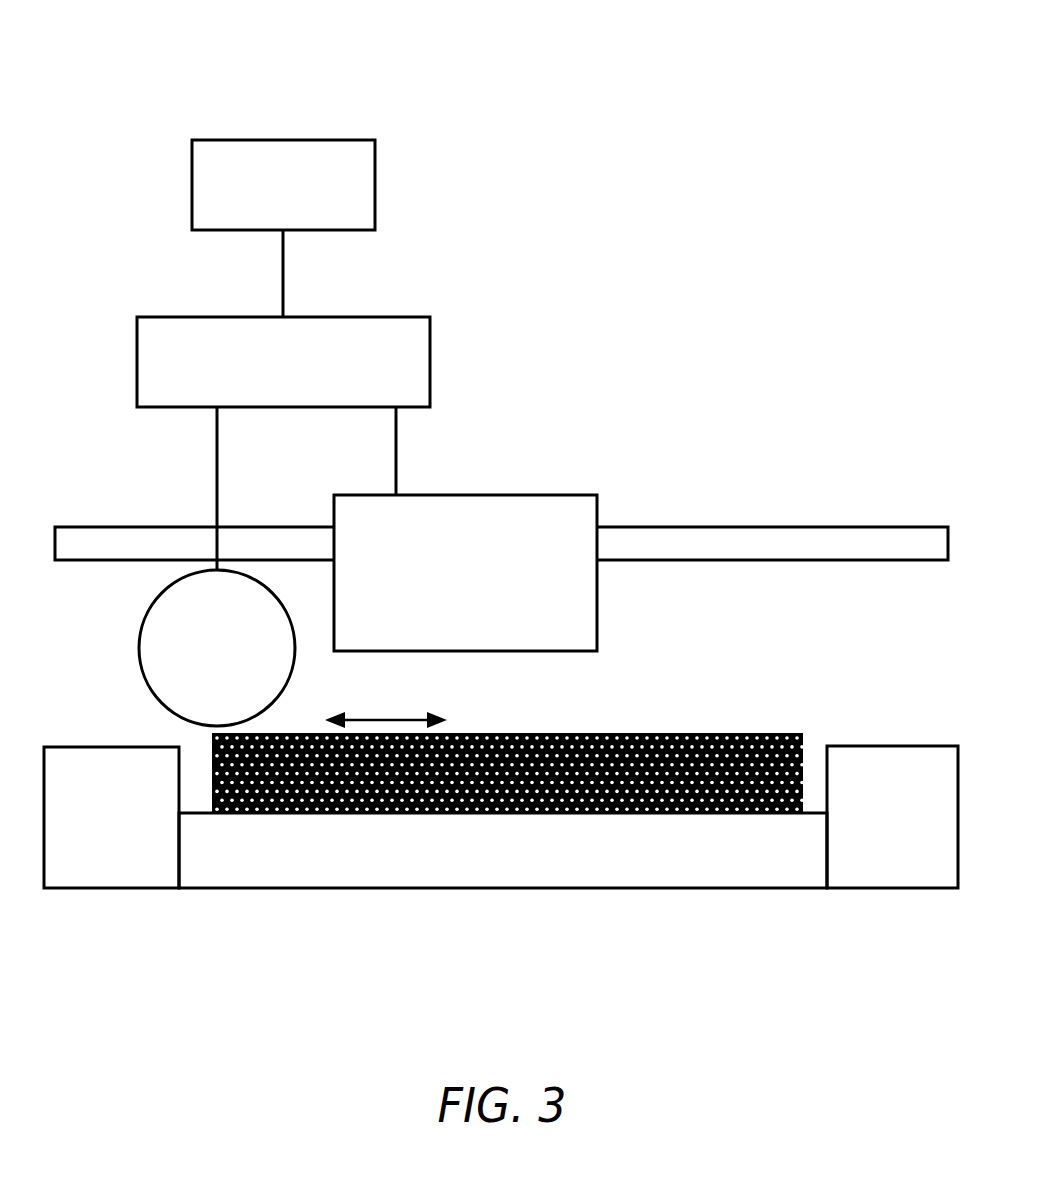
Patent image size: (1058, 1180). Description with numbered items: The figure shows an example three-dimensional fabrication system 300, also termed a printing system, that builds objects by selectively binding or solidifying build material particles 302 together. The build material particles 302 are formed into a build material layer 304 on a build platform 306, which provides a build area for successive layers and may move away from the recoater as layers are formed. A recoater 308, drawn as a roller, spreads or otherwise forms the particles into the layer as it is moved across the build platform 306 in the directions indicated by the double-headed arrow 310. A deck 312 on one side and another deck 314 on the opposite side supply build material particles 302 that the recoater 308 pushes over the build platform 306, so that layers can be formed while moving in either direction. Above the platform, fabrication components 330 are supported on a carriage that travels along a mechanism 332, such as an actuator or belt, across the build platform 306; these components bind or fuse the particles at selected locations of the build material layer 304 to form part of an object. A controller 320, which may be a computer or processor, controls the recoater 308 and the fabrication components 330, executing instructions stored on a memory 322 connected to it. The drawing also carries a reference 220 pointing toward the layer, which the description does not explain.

The 3D fabrication system 300 is at (501, 529).
The memory 322 is at (283, 185).
The controller 320 is at (283, 362).
The mechanism 332 is at (122, 527).
The fabrication components 330 is at (465, 573).
The recoater 308 is at (139, 641).
The deck 312 is at (111, 817).
The deck 314 is at (892, 817).
The build platform 306 is at (503, 850).
The build material particles 302 is at (316, 814).
The build material layer 304 is at (479, 873).
The arrow 310 is at (390, 716).
The build material region 220 is at (652, 712).